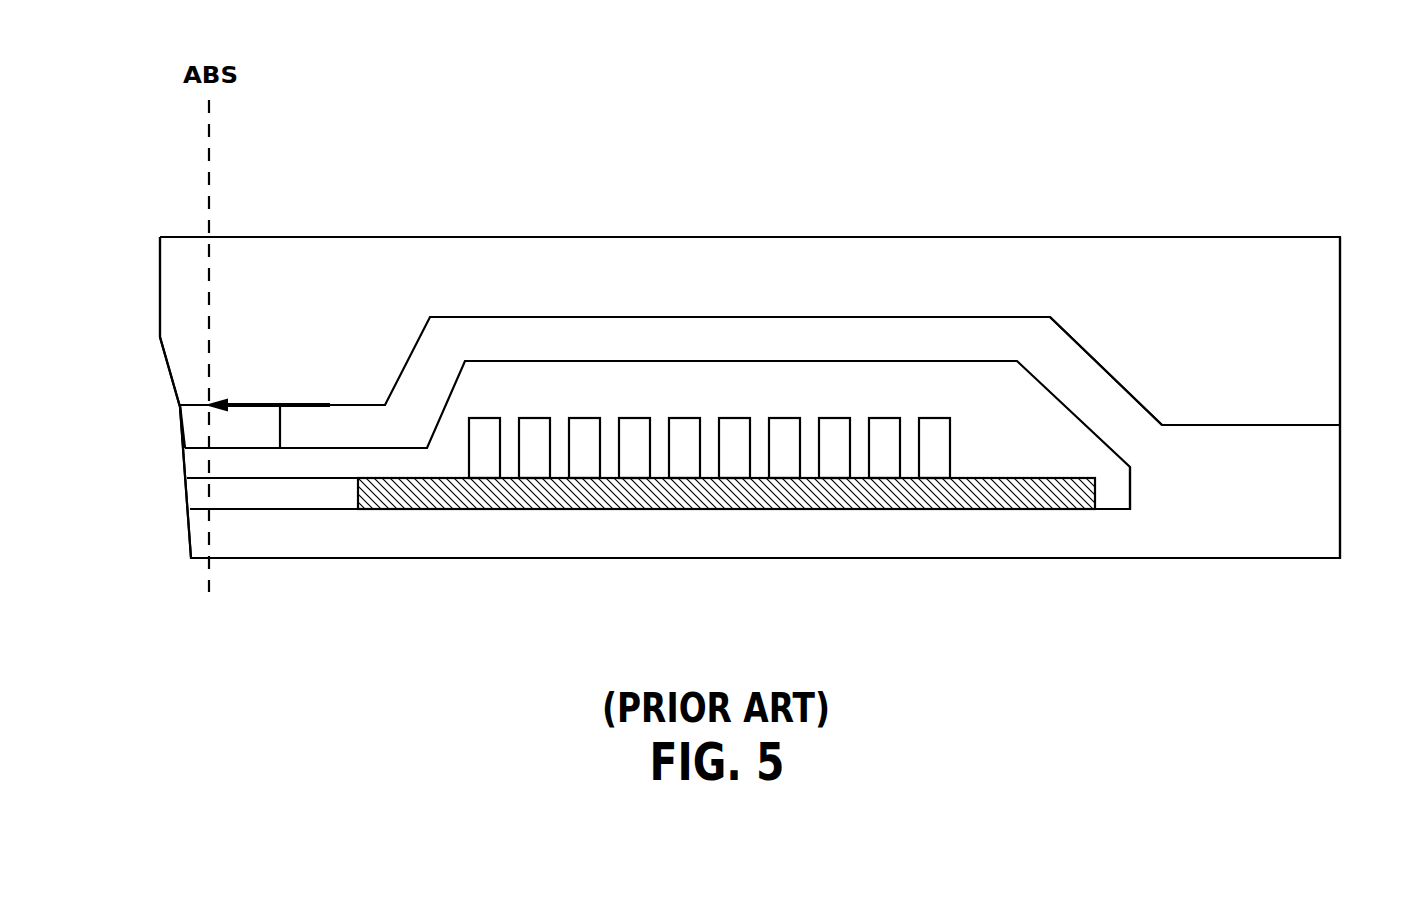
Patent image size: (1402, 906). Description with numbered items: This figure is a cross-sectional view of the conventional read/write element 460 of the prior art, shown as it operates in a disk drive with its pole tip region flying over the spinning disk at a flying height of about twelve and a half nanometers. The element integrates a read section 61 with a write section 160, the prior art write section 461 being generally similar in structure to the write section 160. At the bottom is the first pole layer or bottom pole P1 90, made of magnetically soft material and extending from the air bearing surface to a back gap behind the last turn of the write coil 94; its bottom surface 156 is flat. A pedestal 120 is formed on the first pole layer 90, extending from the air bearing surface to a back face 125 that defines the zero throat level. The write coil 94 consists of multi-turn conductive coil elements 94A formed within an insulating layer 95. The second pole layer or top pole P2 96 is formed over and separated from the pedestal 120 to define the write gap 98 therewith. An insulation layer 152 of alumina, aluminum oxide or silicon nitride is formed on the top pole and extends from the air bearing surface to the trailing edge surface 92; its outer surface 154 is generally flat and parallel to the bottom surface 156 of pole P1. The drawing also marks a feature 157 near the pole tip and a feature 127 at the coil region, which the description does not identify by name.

The conventional read/write element 460 is at (723, 55).
The outer surface 154 is at (375, 237).
The insulation layer 152 is at (515, 275).
The write coil 94 is at (808, 360).
The write section 461 is at (1047, 337).
The insulating layer 95 is at (908, 400).
The conductive coil elements 94A is at (685, 430).
The throat height arrow 157 is at (303, 405).
The second pole layer 96 is at (225, 442).
The write section 160 is at (148, 430).
The write gap 98 is at (182, 468).
The pedestal 120 is at (185, 496).
The read section 61 is at (170, 517).
The back face 125 is at (358, 495).
The first pole layer 90 is at (765, 542).
The trailing edge surface 92 is at (1340, 475).
The coil insulation 127 is at (1095, 485).
The bottom surface 156 is at (915, 558).